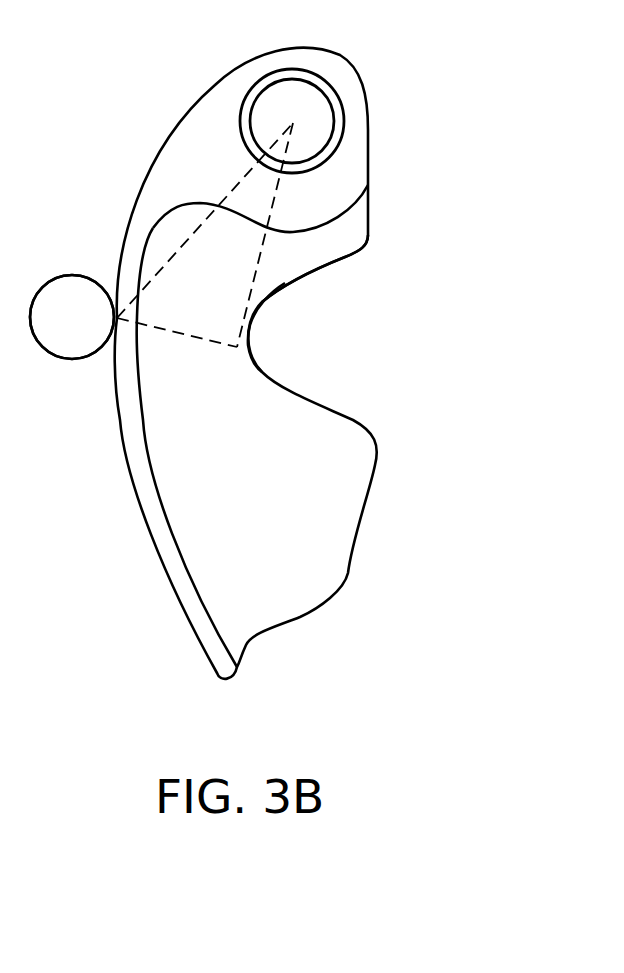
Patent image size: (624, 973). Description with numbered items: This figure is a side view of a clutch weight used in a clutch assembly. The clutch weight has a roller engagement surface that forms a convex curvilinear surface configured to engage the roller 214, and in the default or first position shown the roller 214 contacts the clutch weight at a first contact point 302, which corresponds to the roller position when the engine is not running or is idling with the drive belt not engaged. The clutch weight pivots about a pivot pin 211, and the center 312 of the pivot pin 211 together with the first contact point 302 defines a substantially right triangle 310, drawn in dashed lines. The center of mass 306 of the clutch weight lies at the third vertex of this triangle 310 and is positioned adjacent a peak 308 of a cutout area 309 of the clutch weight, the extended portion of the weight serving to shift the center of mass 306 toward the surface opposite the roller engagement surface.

The pivot pin 211 is at (300, 95).
The center of the pivot pin 312 is at (318, 152).
The substantially right triangle 310 is at (262, 255).
The peak of the cutout area 308 is at (248, 330).
The cutout area 309 is at (446, 290).
The center of mass 306 is at (237, 347).
The first contact point 302 is at (110, 348).
The roller 214 is at (53, 330).